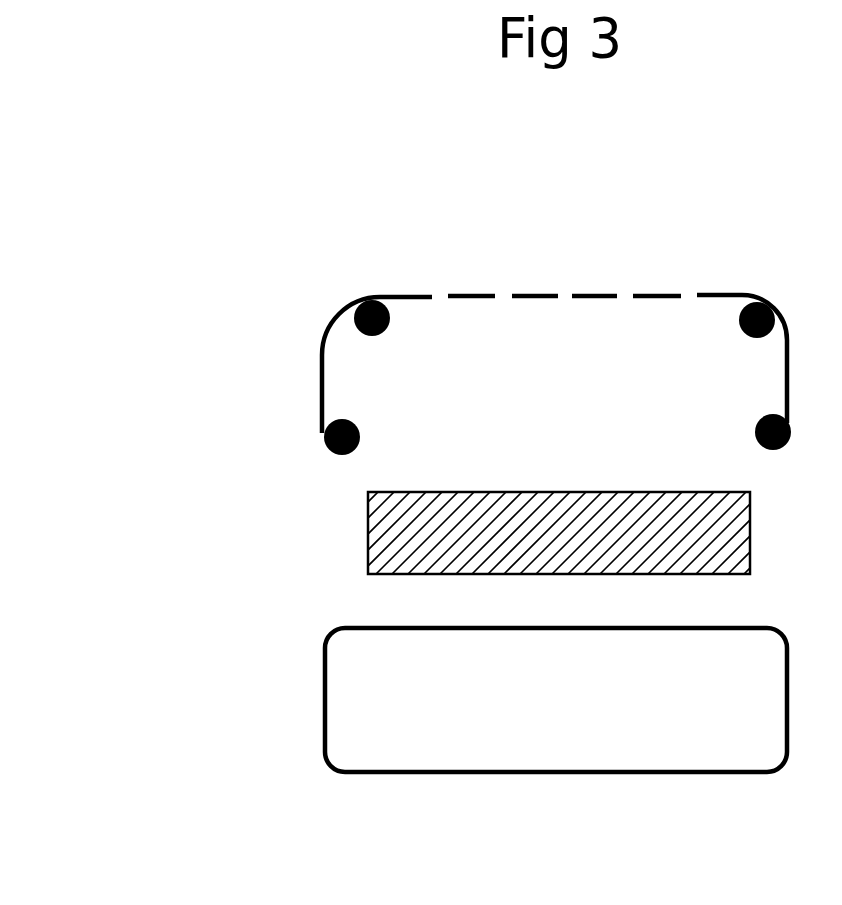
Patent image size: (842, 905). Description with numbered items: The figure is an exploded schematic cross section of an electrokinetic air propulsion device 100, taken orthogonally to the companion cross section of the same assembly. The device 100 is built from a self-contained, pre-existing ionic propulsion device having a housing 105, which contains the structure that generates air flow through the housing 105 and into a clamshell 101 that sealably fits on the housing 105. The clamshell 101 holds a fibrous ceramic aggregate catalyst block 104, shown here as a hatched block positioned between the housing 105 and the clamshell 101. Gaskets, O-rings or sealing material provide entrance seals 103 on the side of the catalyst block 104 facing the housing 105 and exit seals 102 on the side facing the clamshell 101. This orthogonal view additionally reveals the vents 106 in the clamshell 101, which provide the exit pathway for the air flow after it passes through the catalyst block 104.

The electrokinetic air propulsion device 100 is at (270, 524).
The clamshell 101 is at (748, 260).
The exit seals 102 is at (707, 316).
The entrance seals 103 is at (729, 412).
The catalyst block 104 is at (609, 466).
The housing 105 is at (555, 797).
The vents 106 is at (705, 261).